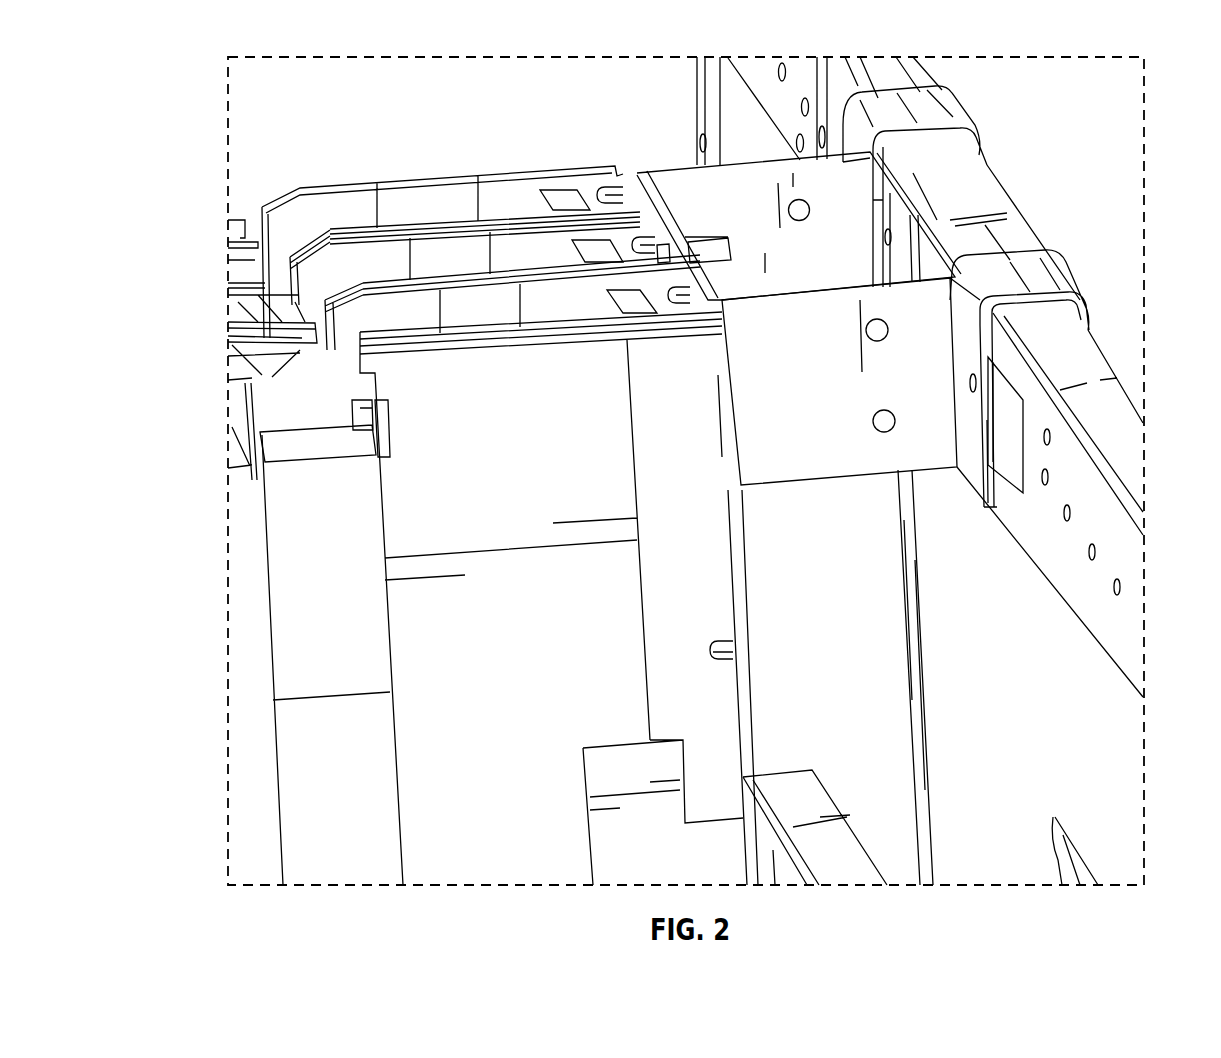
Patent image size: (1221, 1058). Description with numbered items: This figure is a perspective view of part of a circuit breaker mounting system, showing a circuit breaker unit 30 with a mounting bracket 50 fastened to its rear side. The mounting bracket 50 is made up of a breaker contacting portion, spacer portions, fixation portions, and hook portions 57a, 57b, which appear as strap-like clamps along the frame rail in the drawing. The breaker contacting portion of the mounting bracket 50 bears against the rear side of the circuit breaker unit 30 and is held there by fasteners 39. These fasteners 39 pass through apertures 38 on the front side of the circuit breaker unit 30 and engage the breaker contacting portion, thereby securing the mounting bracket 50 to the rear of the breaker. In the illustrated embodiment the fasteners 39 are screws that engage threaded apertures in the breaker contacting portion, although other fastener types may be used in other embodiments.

The circuit breaker unit 30 is at (404, 176).
The apertures 38 is at (292, 282).
The fasteners 39 is at (712, 260).
The mounting bracket 50 is at (830, 478).
The hook portion 57a is at (1068, 272).
The hook portion 57b is at (968, 115).